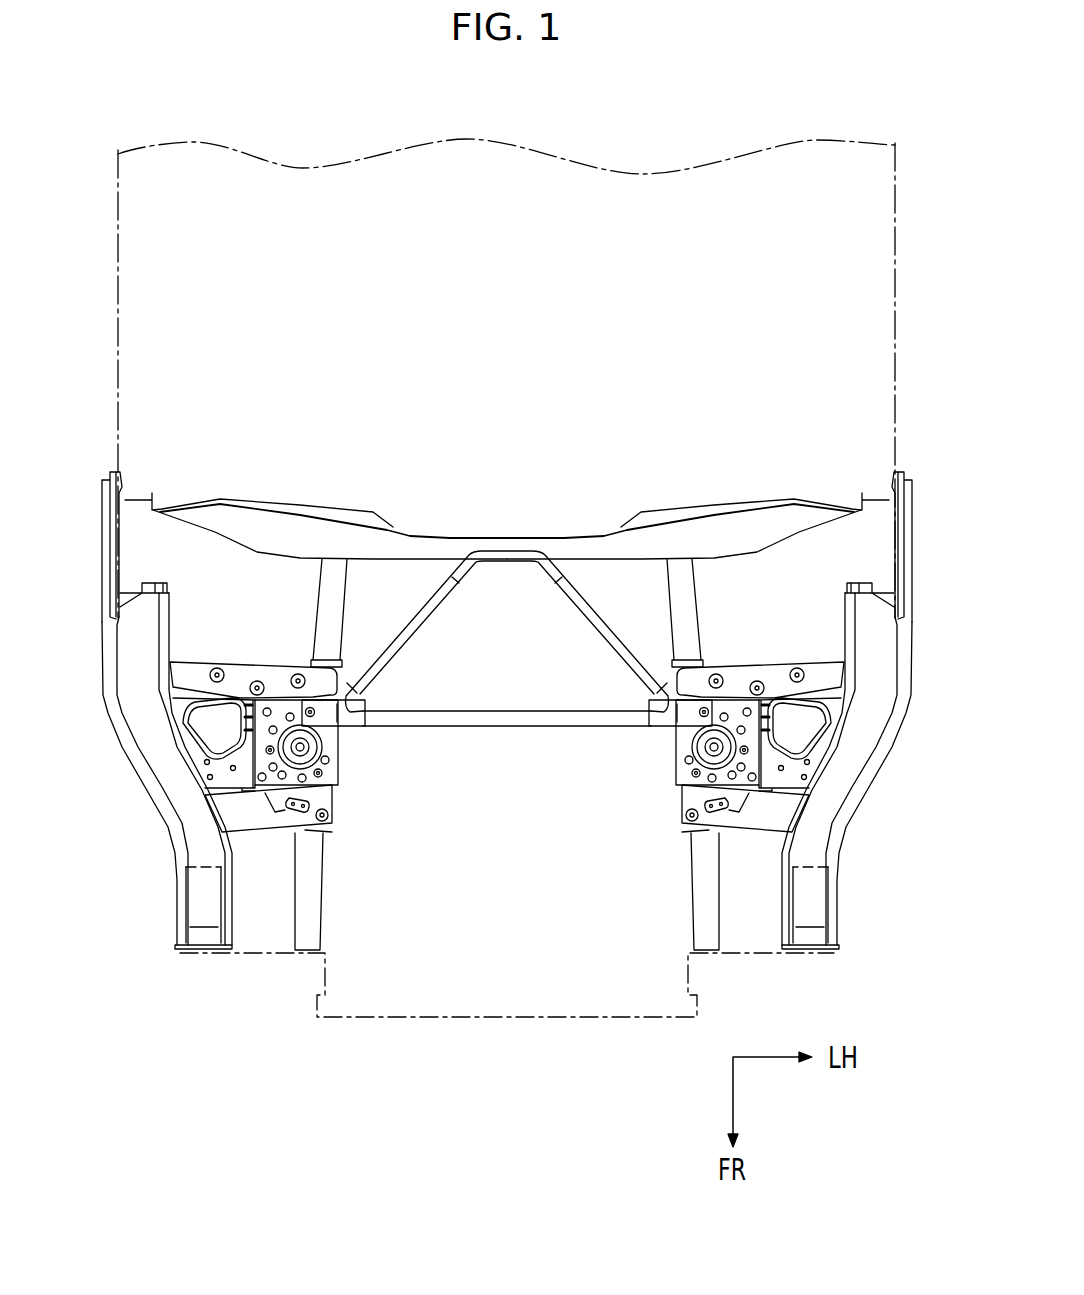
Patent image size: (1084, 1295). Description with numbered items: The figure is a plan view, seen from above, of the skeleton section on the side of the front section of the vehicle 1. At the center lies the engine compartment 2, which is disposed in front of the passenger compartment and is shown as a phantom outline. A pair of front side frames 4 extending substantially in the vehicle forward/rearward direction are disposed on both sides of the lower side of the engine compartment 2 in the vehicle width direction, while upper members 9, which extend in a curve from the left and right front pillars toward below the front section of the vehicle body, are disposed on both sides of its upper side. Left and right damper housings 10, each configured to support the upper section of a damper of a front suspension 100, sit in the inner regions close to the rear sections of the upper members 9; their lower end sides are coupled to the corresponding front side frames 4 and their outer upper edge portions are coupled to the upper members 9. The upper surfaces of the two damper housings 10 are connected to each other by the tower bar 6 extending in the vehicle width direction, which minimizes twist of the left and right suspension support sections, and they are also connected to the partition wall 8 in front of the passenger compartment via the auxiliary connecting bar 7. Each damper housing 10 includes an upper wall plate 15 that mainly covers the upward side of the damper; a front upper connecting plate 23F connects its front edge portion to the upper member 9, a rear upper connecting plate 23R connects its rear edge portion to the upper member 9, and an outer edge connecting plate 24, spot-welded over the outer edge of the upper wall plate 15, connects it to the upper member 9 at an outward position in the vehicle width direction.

The vehicle 1 is at (737, 134).
The engine compartment 2 is at (432, 912).
The front side frames 4 is at (311, 921).
The tower bar 6 is at (510, 722).
The auxiliary connecting bar 7 is at (410, 611).
The partition wall 8 is at (456, 540).
The upper members 9 is at (155, 772).
The damper housing 10 is at (203, 661).
The upper wall plate 15 is at (242, 720).
The rear upper connecting plate 23R is at (286, 671).
The front upper connecting plate 23F is at (262, 842).
The outer edge connecting plate 24 is at (188, 746).
The front suspension 100 is at (281, 769).